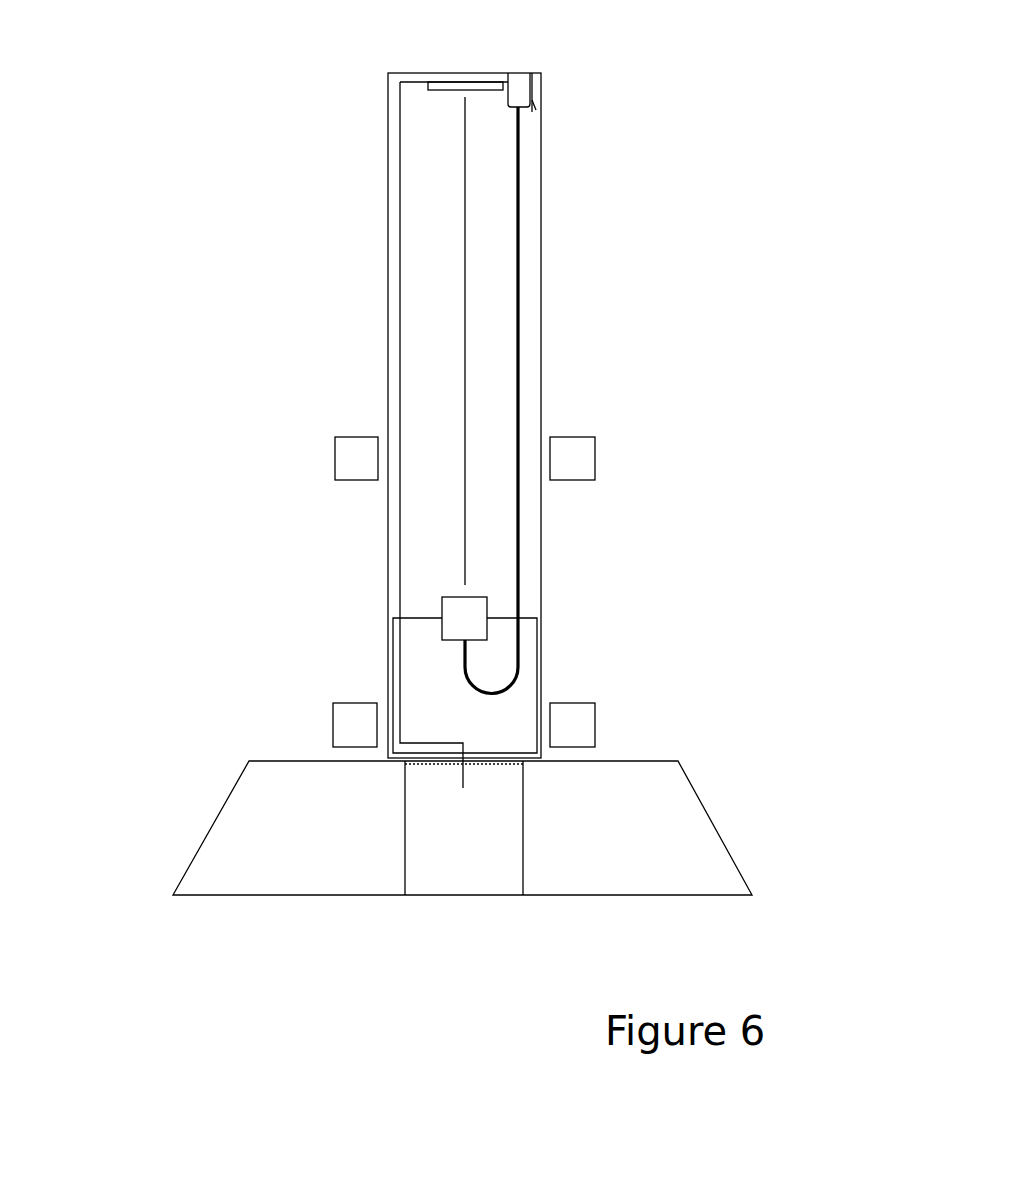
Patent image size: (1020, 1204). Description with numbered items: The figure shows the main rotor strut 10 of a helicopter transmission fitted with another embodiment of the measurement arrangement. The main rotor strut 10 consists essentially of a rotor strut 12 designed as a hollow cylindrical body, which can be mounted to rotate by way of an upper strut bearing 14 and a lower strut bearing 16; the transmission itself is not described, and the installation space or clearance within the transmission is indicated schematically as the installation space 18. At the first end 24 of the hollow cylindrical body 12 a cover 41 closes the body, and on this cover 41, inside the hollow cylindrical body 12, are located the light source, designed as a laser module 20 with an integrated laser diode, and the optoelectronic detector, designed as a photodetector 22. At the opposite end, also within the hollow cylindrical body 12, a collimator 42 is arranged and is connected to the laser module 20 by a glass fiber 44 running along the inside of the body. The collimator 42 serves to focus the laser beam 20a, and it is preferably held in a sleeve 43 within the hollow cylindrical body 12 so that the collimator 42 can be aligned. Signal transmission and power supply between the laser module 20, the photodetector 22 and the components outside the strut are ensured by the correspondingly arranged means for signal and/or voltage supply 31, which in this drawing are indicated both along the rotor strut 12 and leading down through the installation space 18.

The main rotor strut 10 is at (80, 137).
The rotor strut 12 is at (543, 232).
The upper strut bearing 14 is at (578, 437).
The lower strut bearing 16 is at (596, 726).
The installation space 18 is at (217, 812).
The laser module 20 is at (535, 107).
The laser beam 20a is at (460, 272).
The photodetector 22 is at (428, 95).
The first end 24 is at (418, 392).
The means for signal and/or voltage supply 31 is at (400, 392).
The cover 41 is at (545, 72).
The collimator 42 is at (435, 600).
The sleeve 43 is at (525, 697).
The glass fiber 44 is at (521, 291).